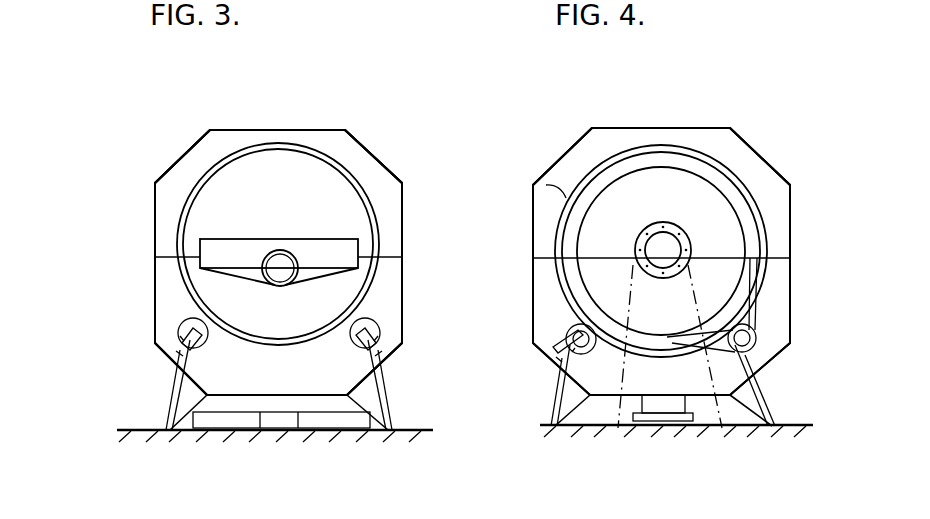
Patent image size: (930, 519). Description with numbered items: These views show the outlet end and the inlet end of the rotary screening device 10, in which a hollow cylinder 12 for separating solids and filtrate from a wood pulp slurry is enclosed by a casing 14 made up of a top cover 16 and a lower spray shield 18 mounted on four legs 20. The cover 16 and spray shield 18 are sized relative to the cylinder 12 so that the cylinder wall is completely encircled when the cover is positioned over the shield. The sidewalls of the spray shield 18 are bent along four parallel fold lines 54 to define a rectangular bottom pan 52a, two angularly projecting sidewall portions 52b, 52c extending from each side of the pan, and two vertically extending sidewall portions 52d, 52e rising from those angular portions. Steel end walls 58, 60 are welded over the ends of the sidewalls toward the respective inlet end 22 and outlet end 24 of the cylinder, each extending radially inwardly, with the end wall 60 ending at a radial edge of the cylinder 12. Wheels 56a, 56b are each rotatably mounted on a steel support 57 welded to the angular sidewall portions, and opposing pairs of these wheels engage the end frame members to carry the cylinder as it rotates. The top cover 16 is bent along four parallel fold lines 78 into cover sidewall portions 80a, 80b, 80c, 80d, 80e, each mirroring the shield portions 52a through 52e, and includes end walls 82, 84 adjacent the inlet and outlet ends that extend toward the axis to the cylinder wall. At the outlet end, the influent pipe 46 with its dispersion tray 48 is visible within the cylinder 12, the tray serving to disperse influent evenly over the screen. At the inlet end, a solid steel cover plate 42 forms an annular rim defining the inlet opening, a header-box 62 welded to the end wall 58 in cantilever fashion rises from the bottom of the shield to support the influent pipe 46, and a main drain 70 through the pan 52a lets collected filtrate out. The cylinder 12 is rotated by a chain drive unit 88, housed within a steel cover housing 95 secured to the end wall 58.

In FIG. 3, the rotary screening device 10 is at (428, 173).
In FIG. 4, the rotary screening device 10 is at (778, 153).
In FIG. 3, the hollow cylinder 12 is at (337, 182).
In FIG. 4, the hollow cylinder 12 is at (547, 182).
In FIG. 3, the casing 14 is at (297, 125).
In FIG. 3, the top cover 16 is at (182, 163).
In FIG. 4, the top cover 16 is at (737, 143).
In FIG. 3, the lower spray shield 18 is at (174, 355).
In FIG. 4, the lower spray shield 18 is at (780, 287).
In FIG. 3, the legs 20 is at (208, 432).
In FIG. 4, the legs 20 is at (770, 395).
In FIG. 4, the inlet end 22 is at (668, 247).
In FIG. 3, the outlet end 24 is at (196, 234).
In FIG. 4, the inlet end cover plate 42 is at (598, 219).
In FIG. 3, the inlet influent pipe 46 is at (276, 280).
In FIG. 3, the dispersion tray 48 is at (317, 255).
In FIG. 3, the bottom pan sidewall portion 52a is at (292, 395).
In FIG. 3, the angularly projecting sidewall portion 52b is at (160, 437).
In FIG. 3, the angularly projecting sidewall portion 52c is at (402, 432).
In FIG. 3, the vertically extending sidewall portion 52d is at (402, 273).
In FIG. 3, the vertically extending sidewall portion 52e is at (155, 283).
In FIG. 3, the fold lines 54 is at (186, 340).
In FIG. 4, the fold lines 54 is at (603, 416).
In FIG. 4, the support wheel 56a is at (571, 328).
In FIG. 3, the support wheel 56b is at (183, 323).
In FIG. 3, the steel support 57 is at (186, 352).
In FIG. 4, the steel support 57 is at (565, 347).
In FIG. 4, the end wall 58 is at (548, 290).
In FIG. 3, the end wall 60 is at (343, 383).
In FIG. 4, the header-box 62 is at (630, 422).
In FIG. 4, the main drain 70 is at (688, 425).
In FIG. 3, the fold lines 78 is at (210, 130).
In FIG. 4, the fold lines 78 is at (592, 128).
In FIG. 3, the cover sidewall portion 80a is at (322, 128).
In FIG. 3, the cover sidewall portion 80b is at (163, 175).
In FIG. 3, the cover sidewall portion 80c is at (333, 180).
In FIG. 3, the cover sidewall portion 80d is at (402, 225).
In FIG. 3, the cover sidewall portion 80e is at (155, 217).
In FIG. 4, the cover end wall 82 is at (628, 135).
In FIG. 3, the cover end wall 84 is at (235, 142).
In FIG. 4, the chain drive unit 88 is at (757, 337).
In FIG. 4, the cover housing 95 is at (753, 315).